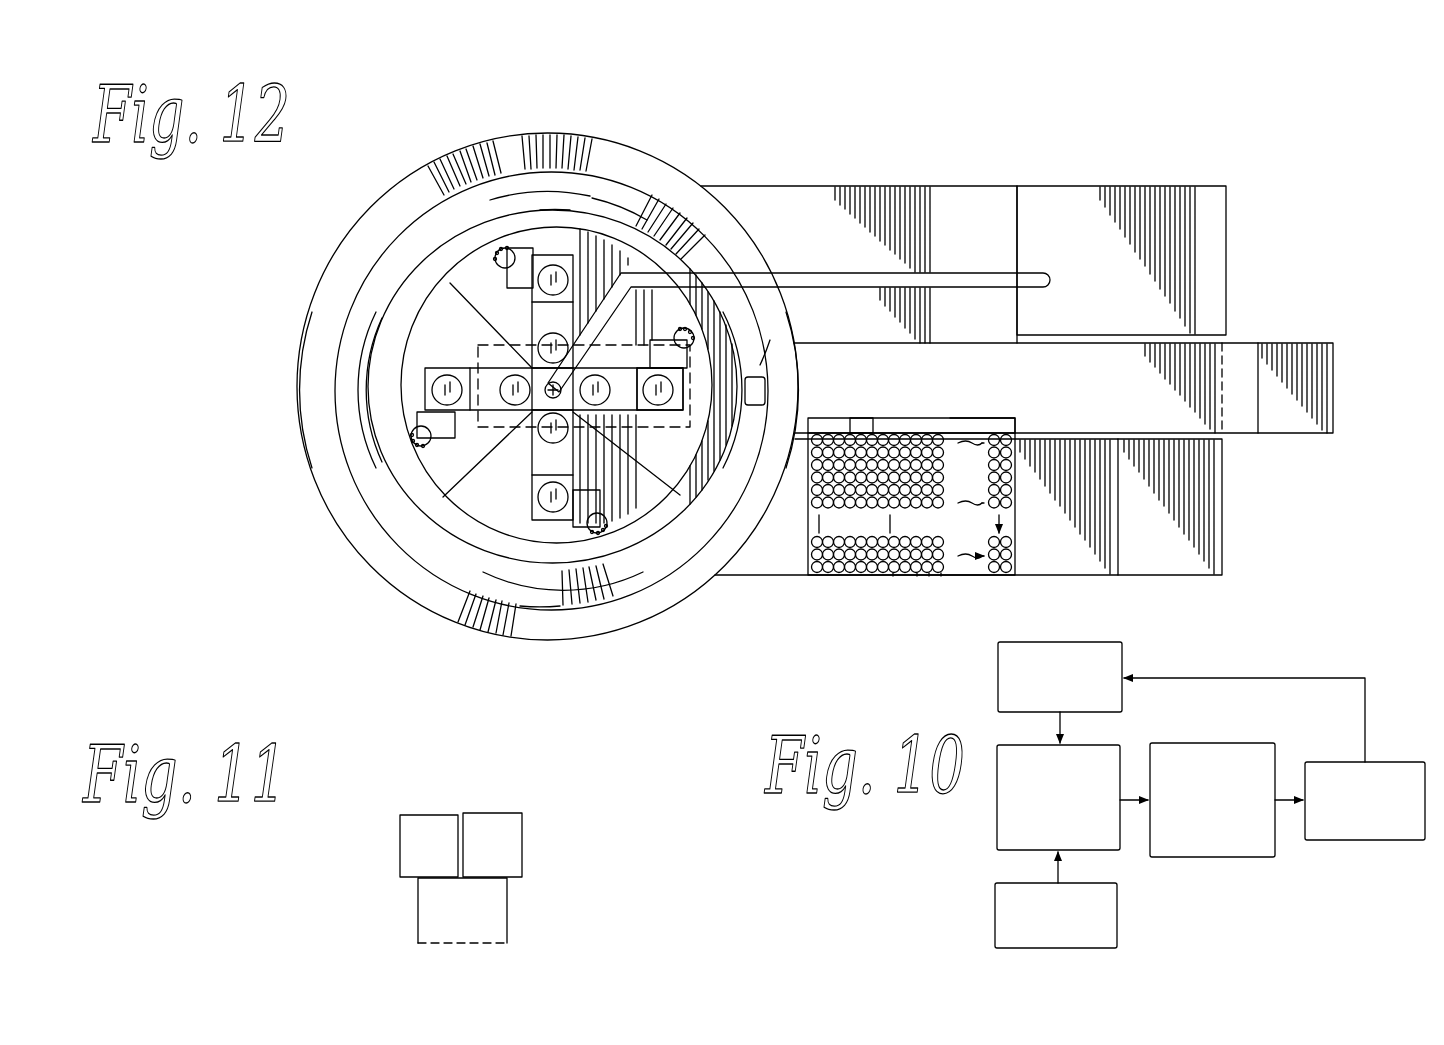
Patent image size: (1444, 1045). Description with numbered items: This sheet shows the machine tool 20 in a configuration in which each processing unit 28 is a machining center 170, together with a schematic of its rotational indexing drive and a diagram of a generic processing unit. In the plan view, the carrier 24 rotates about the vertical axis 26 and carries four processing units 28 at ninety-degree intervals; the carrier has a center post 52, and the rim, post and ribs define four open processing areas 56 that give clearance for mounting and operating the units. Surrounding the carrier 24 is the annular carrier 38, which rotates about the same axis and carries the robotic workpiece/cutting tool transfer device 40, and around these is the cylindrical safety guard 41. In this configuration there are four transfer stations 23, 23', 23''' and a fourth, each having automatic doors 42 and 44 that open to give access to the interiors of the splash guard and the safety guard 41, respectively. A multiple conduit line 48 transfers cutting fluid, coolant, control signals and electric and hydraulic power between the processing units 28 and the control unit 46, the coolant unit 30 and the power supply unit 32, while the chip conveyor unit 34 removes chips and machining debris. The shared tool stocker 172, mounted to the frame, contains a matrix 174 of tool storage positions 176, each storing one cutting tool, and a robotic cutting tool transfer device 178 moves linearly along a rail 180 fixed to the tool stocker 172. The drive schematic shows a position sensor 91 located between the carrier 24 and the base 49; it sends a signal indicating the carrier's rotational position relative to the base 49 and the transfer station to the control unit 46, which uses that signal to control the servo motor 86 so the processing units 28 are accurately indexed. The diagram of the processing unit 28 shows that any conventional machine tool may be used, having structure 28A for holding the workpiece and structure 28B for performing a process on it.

In FIG. 12, the machine tool 20 is at (942, 160).
In FIG. 12, the workpiece transfer station 23 is at (481, 385).
In FIG. 12, the transfer station 23' is at (542, 643).
In FIG. 12, the transfer station 23''' is at (544, 144).
In FIG. 12, the carrier 24 is at (615, 547).
In FIG. 10, the carrier 24 is at (1048, 707).
In FIG. 12, the vertical axis 26 is at (478, 345).
In FIG. 12, the processing unit 28 is at (557, 257).
In FIG. 11, the processing unit 28 is at (416, 888).
In FIG. 11, the structure for holding the workpiece 28A is at (418, 838).
In FIG. 11, the structure for performing a process on a workpiece 28B is at (512, 830).
In FIG. 12, the coolant unit 30 is at (1175, 578).
In FIG. 12, the power supply unit 32 is at (1098, 578).
In FIG. 12, the chip conveyor unit 34 is at (1295, 343).
In FIG. 12, the carrier 38 is at (387, 277).
In FIG. 12, the workpiece/cutting tool transfer device 40 is at (770, 392).
In FIG. 12, the safety guard 41 is at (400, 190).
In FIG. 12, the automatic door 42 is at (647, 217).
In FIG. 12, the automatic door 44 is at (302, 452).
In FIG. 12, the control unit 46 is at (1213, 228).
In FIG. 10, the control unit 46 is at (1200, 847).
In FIG. 12, the multiple conduit line 48 is at (960, 277).
In FIG. 12, the base 49 is at (460, 237).
In FIG. 10, the base 49 is at (1044, 944).
In FIG. 12, the center post 52 is at (548, 384).
In FIG. 12, the processing area 56 is at (488, 313).
In FIG. 10, the servo motor 86 is at (1353, 831).
In FIG. 10, the position sensor 91 is at (1046, 841).
In FIG. 12, the machining center 170 is at (655, 407).
In FIG. 12, the tool stocker 172 is at (808, 573).
In FIG. 12, the matrix 174 is at (855, 580).
In FIG. 12, the tool storage position 176 is at (941, 575).
In FIG. 12, the cutting tool transfer device 178 is at (866, 417).
In FIG. 12, the rail 180 is at (975, 425).